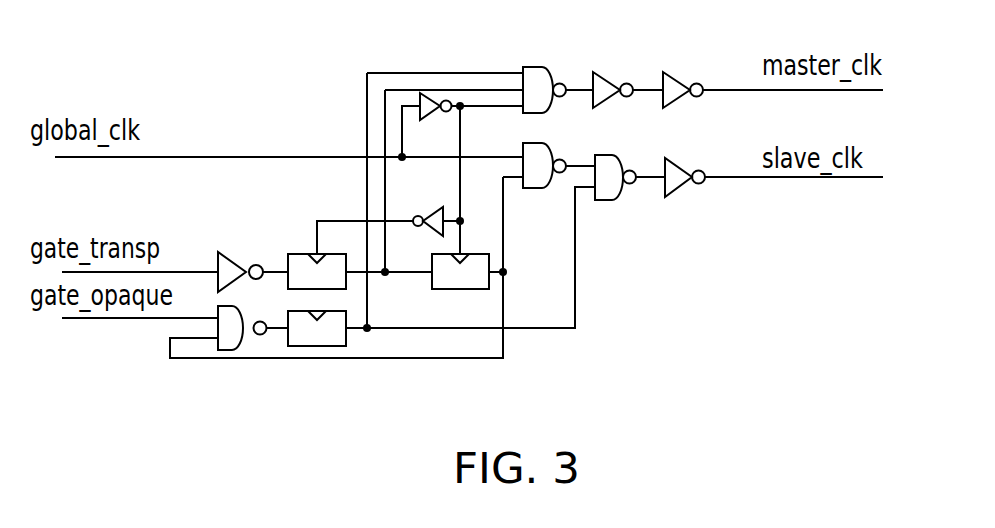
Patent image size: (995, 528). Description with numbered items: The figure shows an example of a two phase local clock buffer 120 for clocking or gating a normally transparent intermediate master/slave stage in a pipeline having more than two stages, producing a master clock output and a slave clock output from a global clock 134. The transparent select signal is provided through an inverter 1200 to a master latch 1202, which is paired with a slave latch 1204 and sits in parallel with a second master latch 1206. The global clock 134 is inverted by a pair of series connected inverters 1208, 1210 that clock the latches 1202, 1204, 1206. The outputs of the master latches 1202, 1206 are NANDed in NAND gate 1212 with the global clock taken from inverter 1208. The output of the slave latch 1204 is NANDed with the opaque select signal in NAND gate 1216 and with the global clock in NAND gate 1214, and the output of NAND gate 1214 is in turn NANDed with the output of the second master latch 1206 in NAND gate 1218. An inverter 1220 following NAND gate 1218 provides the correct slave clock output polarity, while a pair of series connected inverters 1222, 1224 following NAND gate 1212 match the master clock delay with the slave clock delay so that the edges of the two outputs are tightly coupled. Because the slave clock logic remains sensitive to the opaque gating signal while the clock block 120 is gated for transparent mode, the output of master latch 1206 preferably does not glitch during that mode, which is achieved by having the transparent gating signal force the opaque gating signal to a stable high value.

The two phase local clock buffer 120 is at (680, 356).
The global clock 134 is at (247, 157).
The inverter 1200 is at (238, 257).
The master latch 1202 is at (296, 253).
The slave latch 1204 is at (470, 290).
The second master latch 1206 is at (330, 348).
The inverter 1208 is at (427, 92).
The inverter 1210 is at (435, 210).
The NAND gate 1212 is at (543, 74).
The NAND gate 1214 is at (543, 146).
The NAND gate 1216 is at (235, 350).
The NAND gate 1218 is at (612, 163).
The inverter 1220 is at (683, 187).
The inverter 1222 is at (610, 84).
The inverter 1224 is at (684, 74).